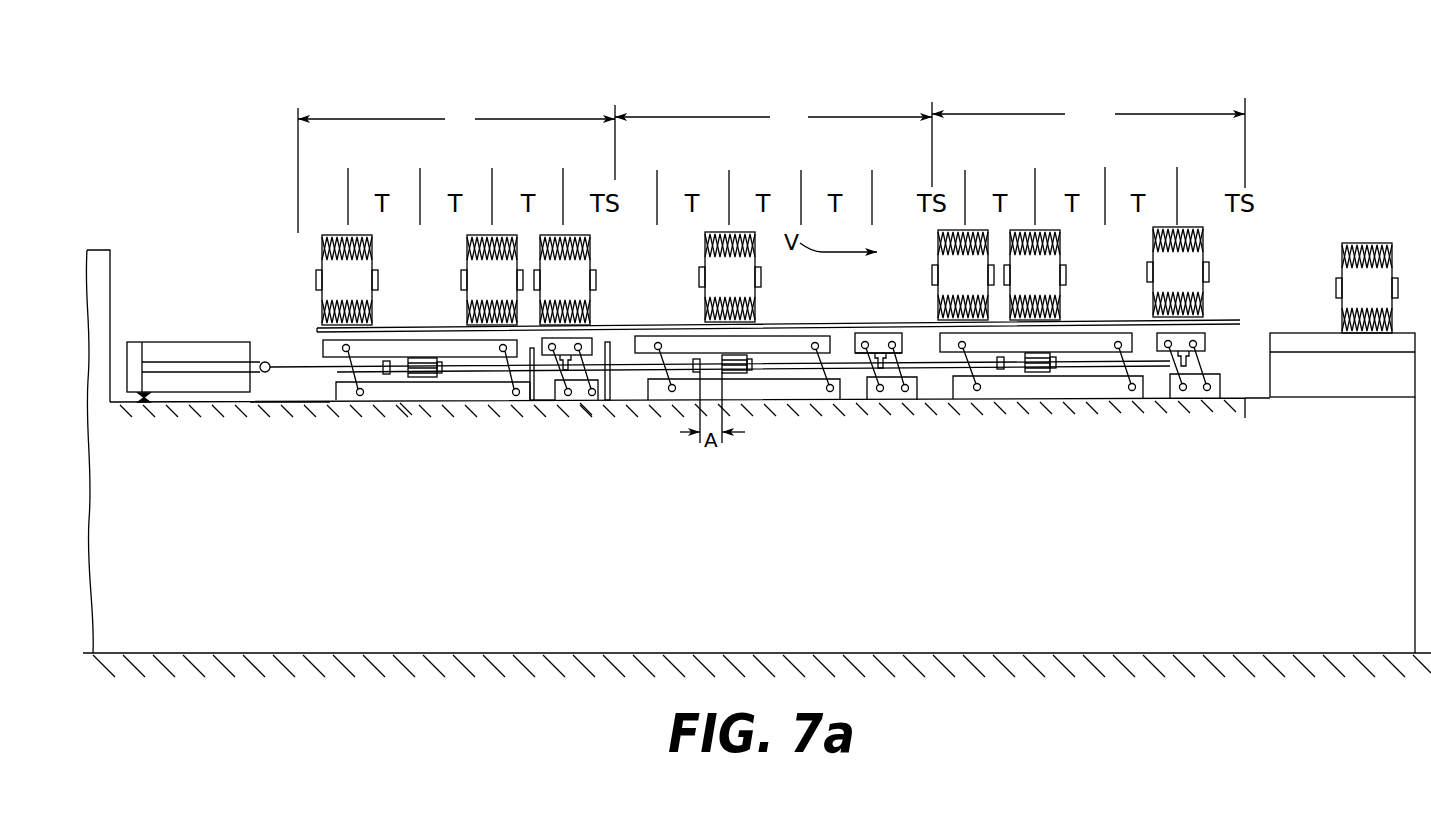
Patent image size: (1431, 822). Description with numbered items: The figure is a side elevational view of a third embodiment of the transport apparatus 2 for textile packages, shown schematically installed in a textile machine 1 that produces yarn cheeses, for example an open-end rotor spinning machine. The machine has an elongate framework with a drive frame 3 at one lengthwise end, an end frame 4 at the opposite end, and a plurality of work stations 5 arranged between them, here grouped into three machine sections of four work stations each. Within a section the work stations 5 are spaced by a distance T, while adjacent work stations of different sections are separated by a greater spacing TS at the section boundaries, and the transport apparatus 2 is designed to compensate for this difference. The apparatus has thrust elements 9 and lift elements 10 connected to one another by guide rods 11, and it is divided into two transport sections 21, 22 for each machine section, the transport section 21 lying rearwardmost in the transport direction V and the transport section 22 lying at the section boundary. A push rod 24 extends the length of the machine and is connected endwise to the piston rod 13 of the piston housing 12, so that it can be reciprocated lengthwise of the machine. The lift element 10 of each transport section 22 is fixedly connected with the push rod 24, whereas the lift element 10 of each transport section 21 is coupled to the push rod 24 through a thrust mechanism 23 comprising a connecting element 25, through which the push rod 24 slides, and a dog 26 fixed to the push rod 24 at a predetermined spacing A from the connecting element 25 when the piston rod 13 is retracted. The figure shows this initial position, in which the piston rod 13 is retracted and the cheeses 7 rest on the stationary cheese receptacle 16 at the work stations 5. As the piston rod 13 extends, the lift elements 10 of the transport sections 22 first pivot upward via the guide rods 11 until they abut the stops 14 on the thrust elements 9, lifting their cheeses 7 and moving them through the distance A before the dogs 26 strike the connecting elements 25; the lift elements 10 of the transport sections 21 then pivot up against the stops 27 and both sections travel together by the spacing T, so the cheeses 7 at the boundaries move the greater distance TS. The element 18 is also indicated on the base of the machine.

The textile machine 1 is at (229, 482).
The transport apparatus 2 is at (1308, 133).
The drive frame 3 is at (98, 258).
The end frame 4 is at (1390, 363).
The work stations 5 is at (336, 97).
The cheeses 7 is at (328, 257).
The thrust elements 9 is at (457, 393).
The lift elements 10 is at (420, 345).
The guide rods 11 is at (828, 376).
The piston housing 12 is at (192, 325).
The piston rod 13 is at (259, 362).
The stops 14 is at (610, 344).
The stationary cheese receptacle 16 is at (677, 321).
The base plate 18 is at (272, 401).
The transport section 21 is at (498, 412).
The transport section 22 is at (593, 410).
The thrust mechanism 23 is at (413, 408).
The push rod 24 is at (295, 363).
The connecting element 25 is at (443, 357).
The dog 26 is at (390, 360).
The stops 27 is at (538, 380).